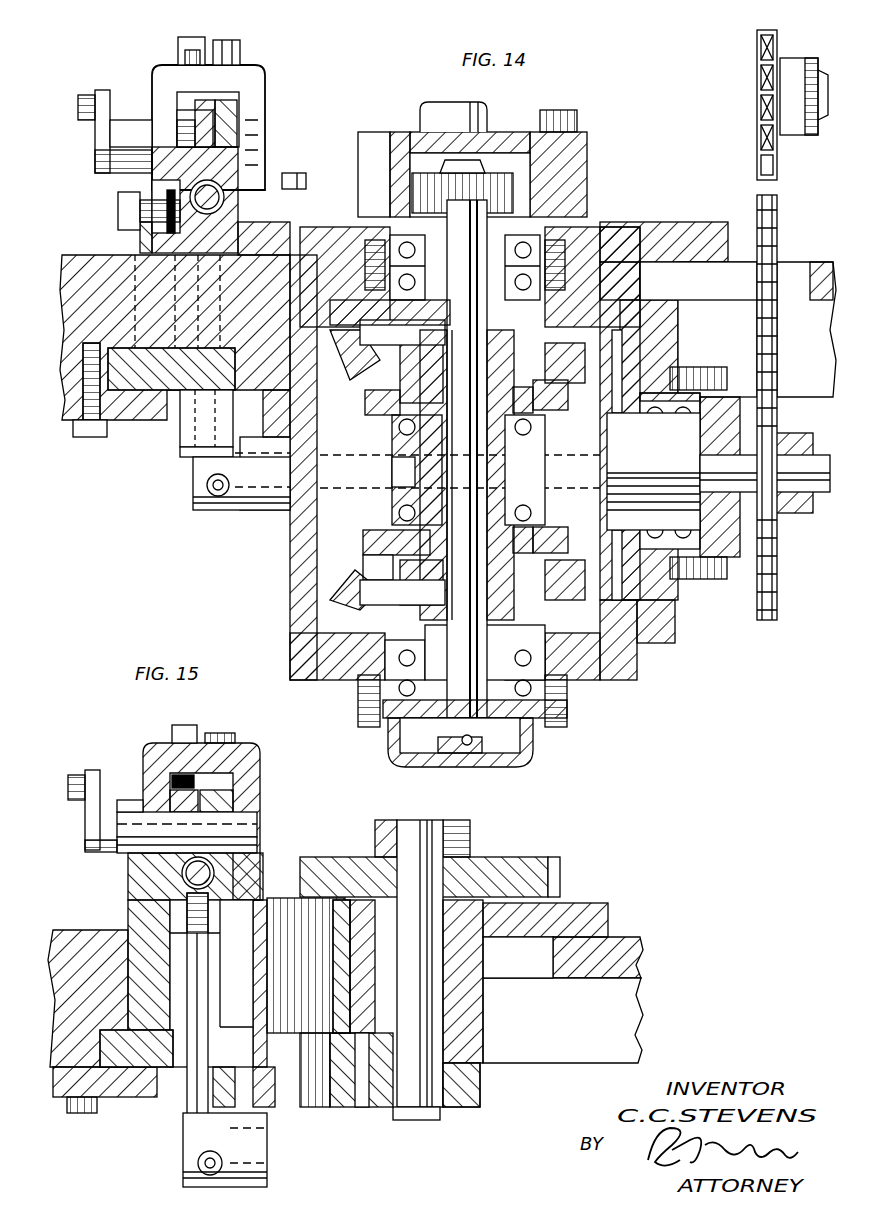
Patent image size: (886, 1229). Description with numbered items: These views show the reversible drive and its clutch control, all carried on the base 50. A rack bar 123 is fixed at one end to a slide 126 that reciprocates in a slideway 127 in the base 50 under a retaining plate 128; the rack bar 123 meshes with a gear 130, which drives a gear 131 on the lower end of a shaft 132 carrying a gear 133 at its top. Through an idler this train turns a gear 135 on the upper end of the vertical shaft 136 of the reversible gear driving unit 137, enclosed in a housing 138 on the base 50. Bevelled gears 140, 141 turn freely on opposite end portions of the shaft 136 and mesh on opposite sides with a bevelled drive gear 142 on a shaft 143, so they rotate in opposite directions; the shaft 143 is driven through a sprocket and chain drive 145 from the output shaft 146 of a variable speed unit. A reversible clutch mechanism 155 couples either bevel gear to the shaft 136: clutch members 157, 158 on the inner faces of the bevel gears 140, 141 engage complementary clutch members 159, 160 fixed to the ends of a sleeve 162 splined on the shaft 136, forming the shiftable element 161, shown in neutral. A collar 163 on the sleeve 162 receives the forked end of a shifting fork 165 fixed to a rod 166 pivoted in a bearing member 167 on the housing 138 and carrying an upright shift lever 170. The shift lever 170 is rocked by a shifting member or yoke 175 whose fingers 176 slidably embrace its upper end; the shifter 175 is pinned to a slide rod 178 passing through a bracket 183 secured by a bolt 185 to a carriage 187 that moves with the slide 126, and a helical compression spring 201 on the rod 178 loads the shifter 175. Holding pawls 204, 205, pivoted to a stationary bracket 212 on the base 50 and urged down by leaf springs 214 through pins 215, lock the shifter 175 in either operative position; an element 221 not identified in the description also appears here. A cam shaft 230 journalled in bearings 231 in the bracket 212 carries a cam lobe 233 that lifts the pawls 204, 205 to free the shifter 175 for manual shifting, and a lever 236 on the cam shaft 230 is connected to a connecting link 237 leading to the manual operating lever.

In FIG. 14, the base 50 is at (85, 262).
In FIG. 15, the base 50 is at (62, 1100).
In FIG. 14, the rack bar 123 is at (272, 440).
In FIG. 15, the rack bar 123 is at (228, 1067).
In FIG. 14, the slide 126 is at (180, 428).
In FIG. 15, the slide 126 is at (112, 1090).
In FIG. 14, the slideway 127 is at (125, 395).
In FIG. 14, the retaining plate 128 is at (95, 437).
In FIG. 15, the retaining plate 128 is at (105, 1113).
In FIG. 15, the gear 130 is at (345, 1107).
In FIG. 15, the gear 131 is at (470, 1107).
In FIG. 15, the shaft 132 is at (418, 830).
In FIG. 15, the gear 133 is at (528, 862).
In FIG. 14, the gear 135 is at (470, 200).
In FIG. 14, the shaft 136 is at (572, 205).
In FIG. 14, the reversible gear driving unit 137 is at (658, 681).
In FIG. 14, the housing 138 is at (663, 647).
In FIG. 14, the bevelled gear 140 is at (636, 299).
In FIG. 14, the bevelled gear 141 is at (590, 680).
In FIG. 14, the bevelled drive gear 142 is at (660, 355).
In FIG. 14, the shaft 143 is at (820, 495).
In FIG. 14, the sprocket and chain drive 145 is at (758, 175).
In FIG. 14, the output shaft 146 is at (825, 75).
In FIG. 14, the reversible clutch mechanism 155 is at (292, 527).
In FIG. 14, the clutch member 157 is at (375, 372).
In FIG. 14, the clutch member 158 is at (375, 578).
In FIG. 14, the clutch member 159 is at (367, 418).
In FIG. 14, the clutch member 160 is at (370, 541).
In FIG. 14, the shiftable element 161 is at (380, 519).
In FIG. 14, the sleeve 162 is at (530, 432).
In FIG. 14, the collar 163 is at (540, 448).
In FIG. 14, the shifting fork 165 is at (395, 471).
In FIG. 14, the rod 166 is at (338, 447).
In FIG. 15, the rod 166 is at (270, 1160).
In FIG. 14, the bearing member 167 is at (270, 507).
In FIG. 14, the shift lever 170 is at (190, 445).
In FIG. 15, the shift lever 170 is at (198, 980).
In FIG. 15, the shifting member or yoke 175 is at (165, 866).
In FIG. 15, the fingers 176 is at (165, 908).
In FIG. 14, the slide rod 178 is at (286, 172).
In FIG. 15, the slide rod 178 is at (185, 885).
In FIG. 14, the bracket 183 is at (190, 100).
In FIG. 14, the bolt 185 is at (110, 214).
In FIG. 14, the carriage 187 is at (132, 187).
In FIG. 15, the carriage 187 is at (122, 909).
In FIG. 14, the helical compression spring 201 is at (215, 185).
In FIG. 15, the holding pawl 204 is at (172, 750).
In FIG. 15, the holding pawl 205 is at (235, 797).
In FIG. 14, the stationary bracket 212 is at (270, 75).
In FIG. 15, the stationary bracket 212 is at (262, 752).
In FIG. 14, the leaf spring 214 is at (215, 42).
In FIG. 15, the leaf spring 214 is at (218, 725).
In FIG. 14, the pin 215 is at (243, 55).
In FIG. 14, the bearing 221 is at (240, 115).
In FIG. 15, the cam shaft 230 is at (250, 822).
In FIG. 15, the bearing 231 is at (262, 838).
In FIG. 15, the cam lobe 233 is at (140, 852).
In FIG. 14, the lever 236 is at (103, 88).
In FIG. 15, the lever 236 is at (95, 768).
In FIG. 14, the connecting link 237 is at (82, 95).
In FIG. 15, the connecting link 237 is at (80, 775).